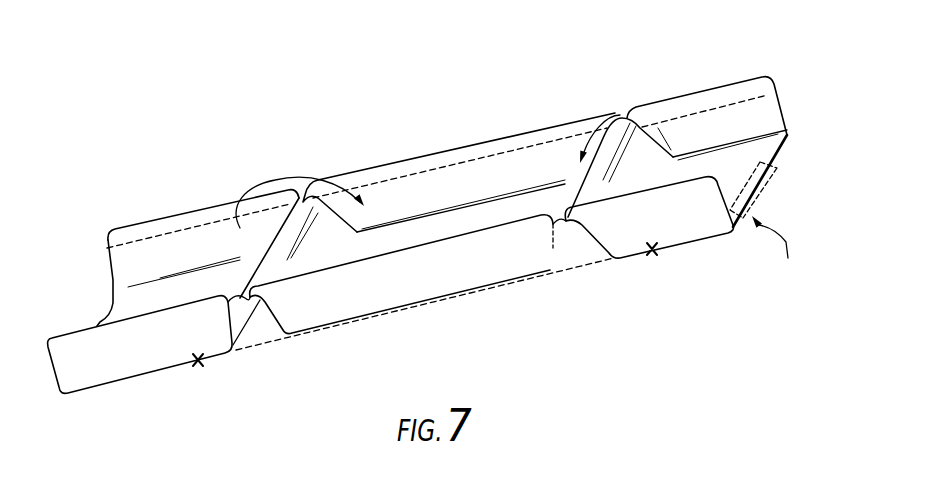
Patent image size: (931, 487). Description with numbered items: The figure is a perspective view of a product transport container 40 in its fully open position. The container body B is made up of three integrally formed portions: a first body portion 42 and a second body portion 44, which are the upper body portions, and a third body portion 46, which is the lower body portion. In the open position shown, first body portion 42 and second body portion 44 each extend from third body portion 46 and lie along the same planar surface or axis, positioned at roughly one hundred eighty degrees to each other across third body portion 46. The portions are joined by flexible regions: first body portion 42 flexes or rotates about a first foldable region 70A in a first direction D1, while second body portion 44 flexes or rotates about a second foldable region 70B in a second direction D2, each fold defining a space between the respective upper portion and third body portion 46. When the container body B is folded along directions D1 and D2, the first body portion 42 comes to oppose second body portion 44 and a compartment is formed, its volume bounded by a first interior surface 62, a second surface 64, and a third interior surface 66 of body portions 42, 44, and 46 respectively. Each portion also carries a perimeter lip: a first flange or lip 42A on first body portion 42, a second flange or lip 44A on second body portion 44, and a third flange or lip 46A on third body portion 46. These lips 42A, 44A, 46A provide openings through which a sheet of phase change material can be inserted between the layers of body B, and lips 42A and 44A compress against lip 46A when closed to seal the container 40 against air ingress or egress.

The product transport container 40 is at (210, 148).
The first body portion 42 is at (158, 348).
The first flange or lip 42A is at (143, 241).
The second body portion 44 is at (608, 240).
The second flange or lip 44A is at (735, 103).
The third body portion 46 is at (408, 287).
The third flange or lip 46A is at (475, 160).
The first interior surface 62 is at (110, 280).
The second surface 64 is at (709, 130).
The third interior surface 66 is at (383, 212).
The first foldable region 70A is at (240, 300).
The second foldable region 70B is at (560, 222).
The container body B is at (462, 263).
The first direction D1 is at (300, 188).
The second direction D2 is at (625, 112).